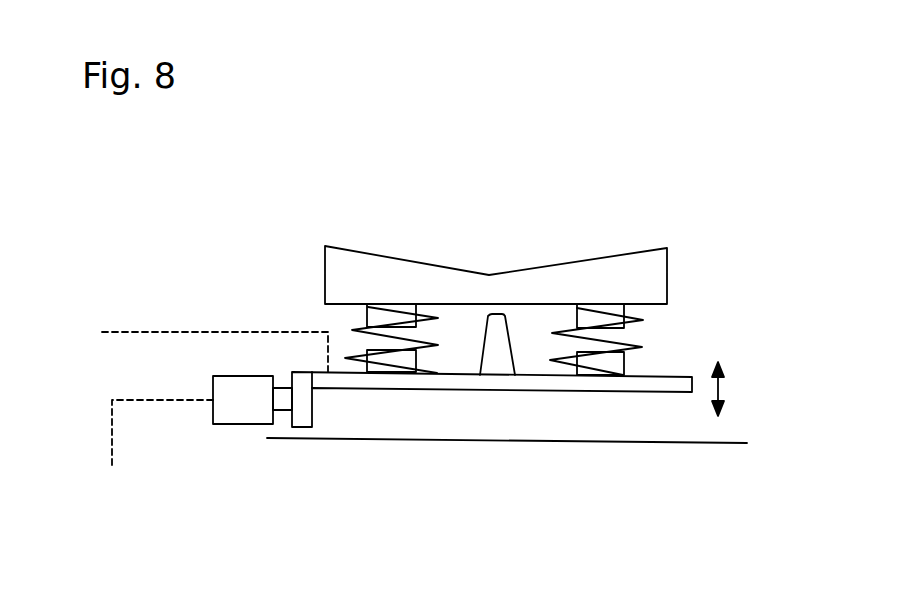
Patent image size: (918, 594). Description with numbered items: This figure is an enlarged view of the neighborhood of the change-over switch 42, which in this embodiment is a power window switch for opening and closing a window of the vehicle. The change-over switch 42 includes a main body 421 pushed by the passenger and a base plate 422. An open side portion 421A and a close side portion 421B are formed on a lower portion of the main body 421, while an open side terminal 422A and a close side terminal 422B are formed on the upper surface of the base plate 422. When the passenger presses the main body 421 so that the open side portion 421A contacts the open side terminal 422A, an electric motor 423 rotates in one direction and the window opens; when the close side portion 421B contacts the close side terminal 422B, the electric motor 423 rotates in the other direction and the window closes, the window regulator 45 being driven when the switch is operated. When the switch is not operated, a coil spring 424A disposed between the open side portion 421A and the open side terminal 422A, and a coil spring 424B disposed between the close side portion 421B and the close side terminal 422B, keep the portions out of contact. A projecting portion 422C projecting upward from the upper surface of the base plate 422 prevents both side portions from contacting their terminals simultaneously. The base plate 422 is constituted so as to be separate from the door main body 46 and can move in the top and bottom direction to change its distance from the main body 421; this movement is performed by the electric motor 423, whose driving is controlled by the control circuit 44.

The change-over switch 42 is at (731, 167).
The main body 421 is at (489, 274).
The open side portion 421A is at (383, 308).
The close side portion 421B is at (607, 308).
The base plate 422 is at (545, 382).
The open side terminal 422A is at (397, 362).
The close side terminal 422B is at (608, 365).
The projecting portion 422C is at (497, 355).
The electric motor 423 is at (242, 413).
The coil spring 424A is at (350, 326).
The coil spring 424B is at (624, 342).
The control circuit 44 is at (150, 449).
The window regulator 45 is at (175, 345).
The door main body 46 is at (698, 460).